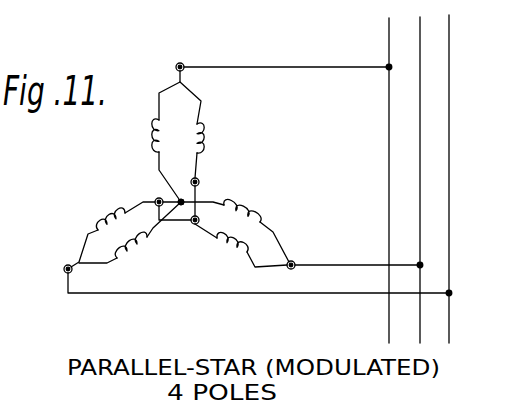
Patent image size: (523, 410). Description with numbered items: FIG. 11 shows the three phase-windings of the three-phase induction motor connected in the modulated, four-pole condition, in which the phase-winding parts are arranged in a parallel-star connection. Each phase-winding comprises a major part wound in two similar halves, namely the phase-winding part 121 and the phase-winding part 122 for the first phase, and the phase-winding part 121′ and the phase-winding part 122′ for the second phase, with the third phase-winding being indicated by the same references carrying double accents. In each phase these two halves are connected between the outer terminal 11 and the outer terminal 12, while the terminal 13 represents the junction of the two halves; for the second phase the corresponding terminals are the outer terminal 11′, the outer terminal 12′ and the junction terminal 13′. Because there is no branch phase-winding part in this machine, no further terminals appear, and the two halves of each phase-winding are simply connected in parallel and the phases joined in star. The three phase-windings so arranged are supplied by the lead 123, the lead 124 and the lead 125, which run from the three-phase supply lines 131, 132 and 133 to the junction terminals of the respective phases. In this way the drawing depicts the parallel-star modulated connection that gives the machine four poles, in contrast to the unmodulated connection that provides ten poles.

The terminal 13 is at (180, 63).
The terminal 13′ is at (294, 262).
The outer terminal 11 is at (198, 180).
The outer terminal 11′ is at (193, 224).
The outer terminal 12 is at (179, 201).
The outer terminal 12′ is at (180, 201).
The phase-winding part 121 is at (201, 136).
The phase-winding part 122 is at (153, 136).
The phase-winding part 121′ is at (237, 262).
The phase-winding part 122′ is at (253, 216).
The supply lead 123 is at (303, 57).
The supply lead 124 is at (362, 247).
The supply lead 125 is at (297, 295).
The three-phase supply line 131 is at (402, 143).
The three-phase supply line 132 is at (433, 143).
The three-phase supply line 133 is at (449, 153).